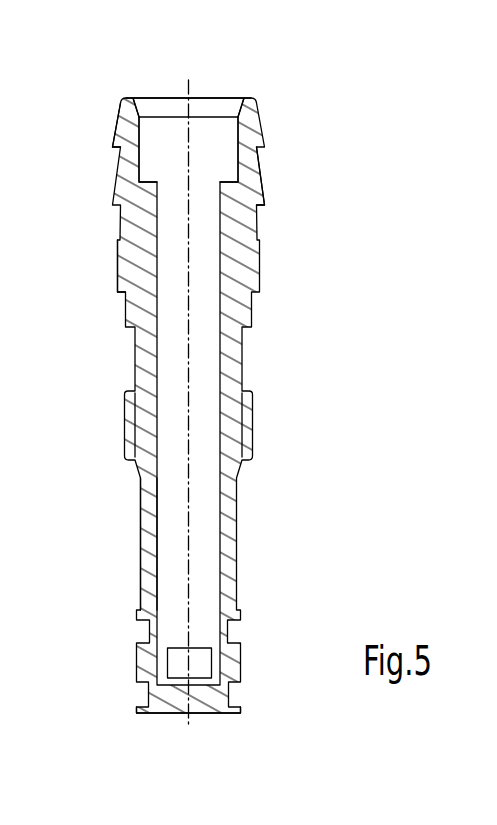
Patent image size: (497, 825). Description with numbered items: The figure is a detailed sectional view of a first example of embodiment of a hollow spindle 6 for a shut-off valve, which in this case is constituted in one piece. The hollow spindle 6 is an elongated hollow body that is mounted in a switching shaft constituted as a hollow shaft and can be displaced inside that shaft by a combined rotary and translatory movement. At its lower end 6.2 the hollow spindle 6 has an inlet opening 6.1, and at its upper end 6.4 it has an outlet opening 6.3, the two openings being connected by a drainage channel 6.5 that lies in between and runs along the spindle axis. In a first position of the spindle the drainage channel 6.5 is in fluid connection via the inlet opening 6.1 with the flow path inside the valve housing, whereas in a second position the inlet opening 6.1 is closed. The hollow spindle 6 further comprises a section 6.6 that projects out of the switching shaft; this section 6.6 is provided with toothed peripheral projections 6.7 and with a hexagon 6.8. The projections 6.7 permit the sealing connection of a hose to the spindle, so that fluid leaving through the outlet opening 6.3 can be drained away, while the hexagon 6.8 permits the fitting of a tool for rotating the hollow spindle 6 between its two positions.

The hollow spindle 6 is at (316, 347).
The inlet opening 6.1 is at (212, 661).
The lower end 6.2 is at (170, 713).
The outlet opening 6.3 is at (213, 107).
The upper end 6.4 is at (130, 95).
The drainage channel 6.5 is at (160, 526).
The section 6.6 is at (256, 221).
The toothed peripheral projections 6.7 is at (112, 148).
The hexagon 6.8 is at (117, 268).